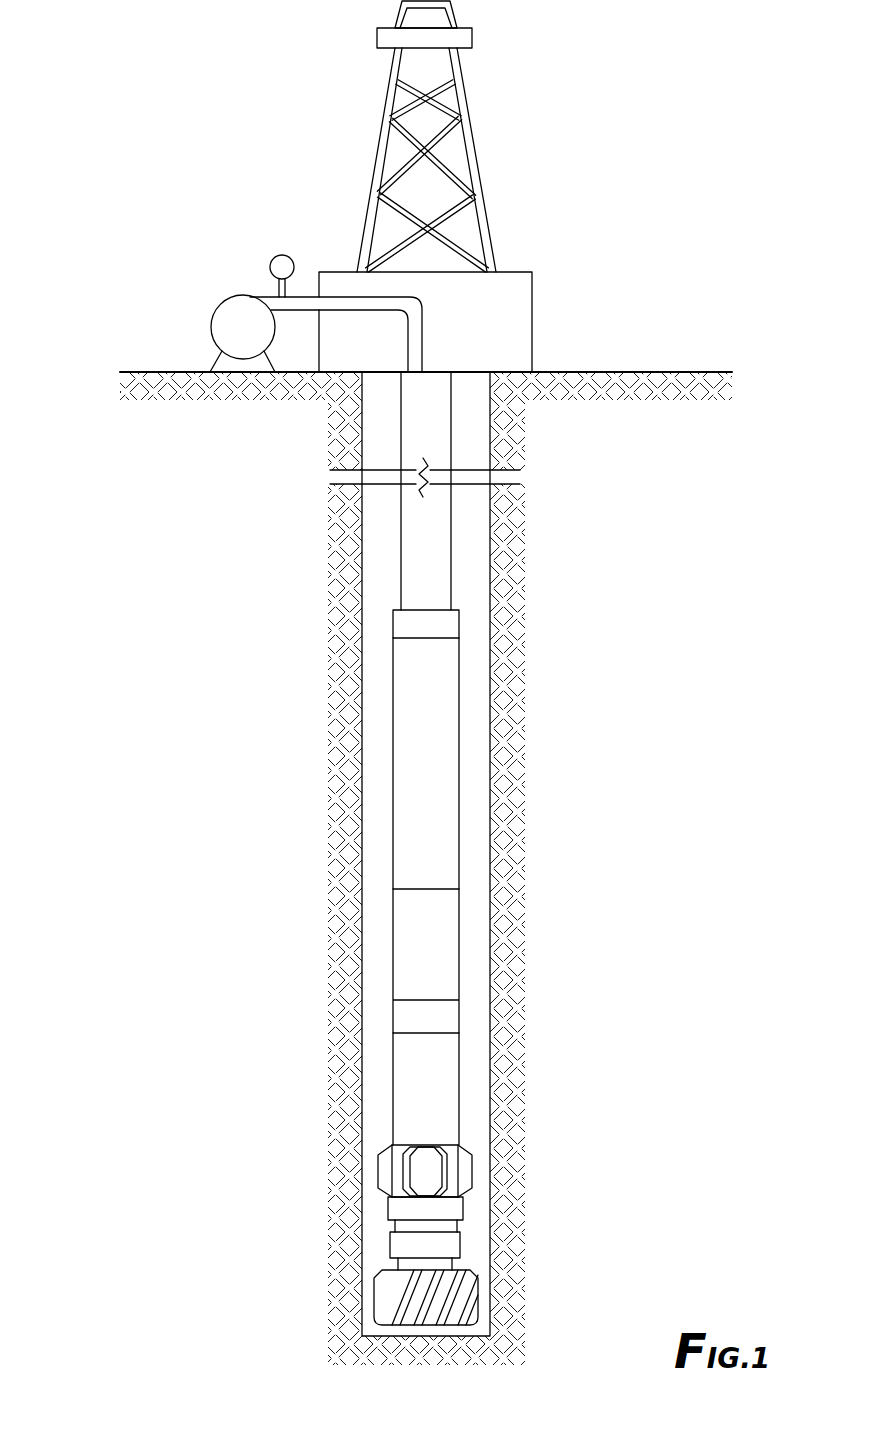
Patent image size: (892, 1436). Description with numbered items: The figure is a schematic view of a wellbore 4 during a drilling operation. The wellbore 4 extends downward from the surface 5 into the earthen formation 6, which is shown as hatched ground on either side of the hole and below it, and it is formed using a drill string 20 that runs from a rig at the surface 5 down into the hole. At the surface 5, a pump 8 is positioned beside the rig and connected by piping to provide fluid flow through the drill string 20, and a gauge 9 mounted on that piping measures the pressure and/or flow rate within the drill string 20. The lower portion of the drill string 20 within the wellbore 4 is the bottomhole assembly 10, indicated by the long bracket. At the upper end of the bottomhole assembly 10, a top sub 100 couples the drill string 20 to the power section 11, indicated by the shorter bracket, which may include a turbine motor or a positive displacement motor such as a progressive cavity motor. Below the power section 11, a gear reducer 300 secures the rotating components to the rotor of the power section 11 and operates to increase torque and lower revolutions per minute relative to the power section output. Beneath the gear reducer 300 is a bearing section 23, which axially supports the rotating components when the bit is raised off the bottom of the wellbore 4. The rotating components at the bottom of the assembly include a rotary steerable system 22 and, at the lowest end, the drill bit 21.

The wellbore 4 is at (494, 656).
The surface 5 is at (718, 372).
The earthen formation 6 is at (675, 780).
The pump 8 is at (212, 315).
The gauge 9 is at (270, 258).
The bottomhole assembly 10 is at (228, 1362).
The power section 11 is at (318, 888).
The drill string 20 is at (451, 553).
The drill bit 21 is at (374, 1292).
The rotary steerable system 22 is at (378, 1170).
The bearing section 23 is at (393, 1045).
The top sub 100 is at (393, 622).
The gear reducer 300 is at (459, 940).